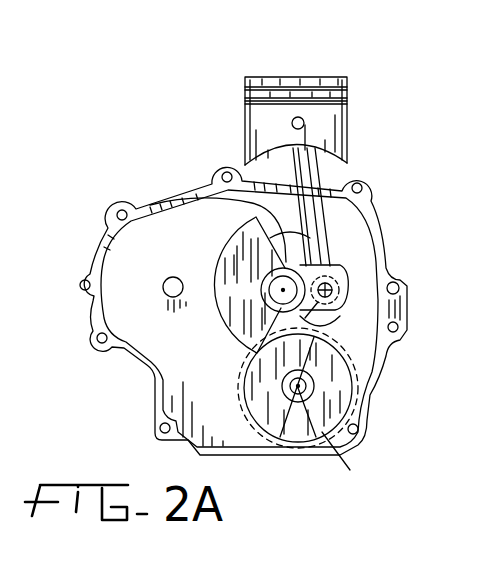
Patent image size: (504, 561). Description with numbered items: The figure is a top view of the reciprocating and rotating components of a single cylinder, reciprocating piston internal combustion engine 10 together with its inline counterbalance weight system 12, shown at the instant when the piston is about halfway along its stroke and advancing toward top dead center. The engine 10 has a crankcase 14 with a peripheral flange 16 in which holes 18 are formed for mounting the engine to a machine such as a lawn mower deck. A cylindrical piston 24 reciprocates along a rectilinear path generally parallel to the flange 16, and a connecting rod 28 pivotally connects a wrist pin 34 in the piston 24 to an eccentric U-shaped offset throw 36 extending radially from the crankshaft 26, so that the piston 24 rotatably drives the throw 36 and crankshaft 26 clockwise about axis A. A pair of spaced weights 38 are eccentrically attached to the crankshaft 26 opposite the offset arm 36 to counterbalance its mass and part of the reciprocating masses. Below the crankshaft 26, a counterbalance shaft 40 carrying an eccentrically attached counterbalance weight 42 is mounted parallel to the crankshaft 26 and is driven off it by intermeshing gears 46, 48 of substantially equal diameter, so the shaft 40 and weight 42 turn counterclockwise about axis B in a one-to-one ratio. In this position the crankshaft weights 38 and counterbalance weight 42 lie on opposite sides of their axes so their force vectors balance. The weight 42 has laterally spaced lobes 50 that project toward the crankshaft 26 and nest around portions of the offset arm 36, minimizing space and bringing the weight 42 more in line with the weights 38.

The engine 10 is at (284, 256).
The inline counterbalance weight system 12 is at (193, 372).
The crankcase 14 is at (139, 232).
The peripheral flange 16 is at (96, 247).
The holes 18 is at (85, 288).
The piston 24 is at (335, 132).
The crankshaft 26 is at (328, 268).
The connecting rod 28 is at (313, 216).
The wrist pin 34 is at (304, 121).
The offset throw 36 is at (318, 322).
The weights 38 is at (222, 310).
The counterbalance shaft 40 is at (293, 398).
The counterbalance weight 42 is at (322, 432).
The gear 46 is at (256, 207).
The gear 48 is at (242, 372).
The lobes 50 is at (350, 377).